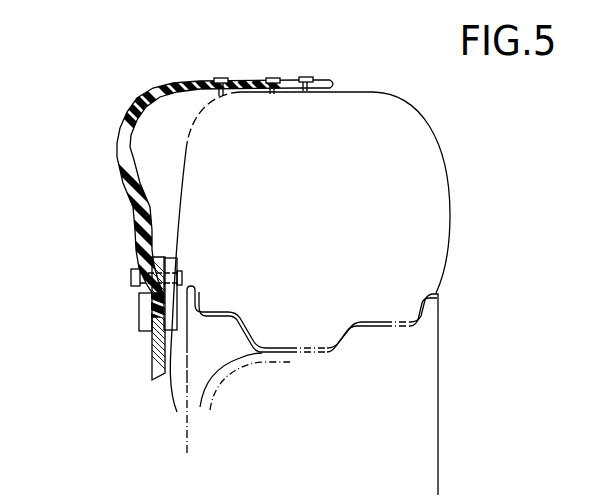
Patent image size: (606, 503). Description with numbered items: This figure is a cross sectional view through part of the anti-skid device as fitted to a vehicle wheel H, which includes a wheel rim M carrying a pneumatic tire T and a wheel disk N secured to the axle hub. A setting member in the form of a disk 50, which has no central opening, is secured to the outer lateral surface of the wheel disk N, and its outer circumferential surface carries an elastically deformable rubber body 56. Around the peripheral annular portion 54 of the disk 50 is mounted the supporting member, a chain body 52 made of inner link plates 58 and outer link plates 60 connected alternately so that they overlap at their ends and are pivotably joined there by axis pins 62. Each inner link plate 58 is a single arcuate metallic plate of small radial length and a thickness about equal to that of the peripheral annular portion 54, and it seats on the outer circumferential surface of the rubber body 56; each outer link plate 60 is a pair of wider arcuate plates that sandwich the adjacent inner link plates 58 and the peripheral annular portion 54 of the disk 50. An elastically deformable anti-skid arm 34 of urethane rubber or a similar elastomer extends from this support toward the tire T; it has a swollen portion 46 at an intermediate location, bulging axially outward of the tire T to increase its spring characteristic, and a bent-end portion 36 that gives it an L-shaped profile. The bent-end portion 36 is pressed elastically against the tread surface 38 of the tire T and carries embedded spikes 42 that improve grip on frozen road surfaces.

The anti-skid arm 34 is at (190, 245).
The bent-end portion 36 is at (190, 219).
The tread surface 38 is at (374, 88).
The spikes 42 is at (274, 79).
The swollen portion 46 is at (133, 220).
The setting member disk 50 is at (165, 297).
The chain body 52 is at (182, 260).
The peripheral annular portion 54 is at (170, 293).
The rubber body 56 is at (152, 307).
The inner link plate 58 is at (157, 265).
The outer link plate 60 is at (142, 322).
The axis pin 62 is at (183, 272).
The wheel rim M is at (243, 318).
The wheel disk N is at (243, 395).
The pneumatic tire T is at (427, 120).
The vehicle wheel H is at (447, 342).